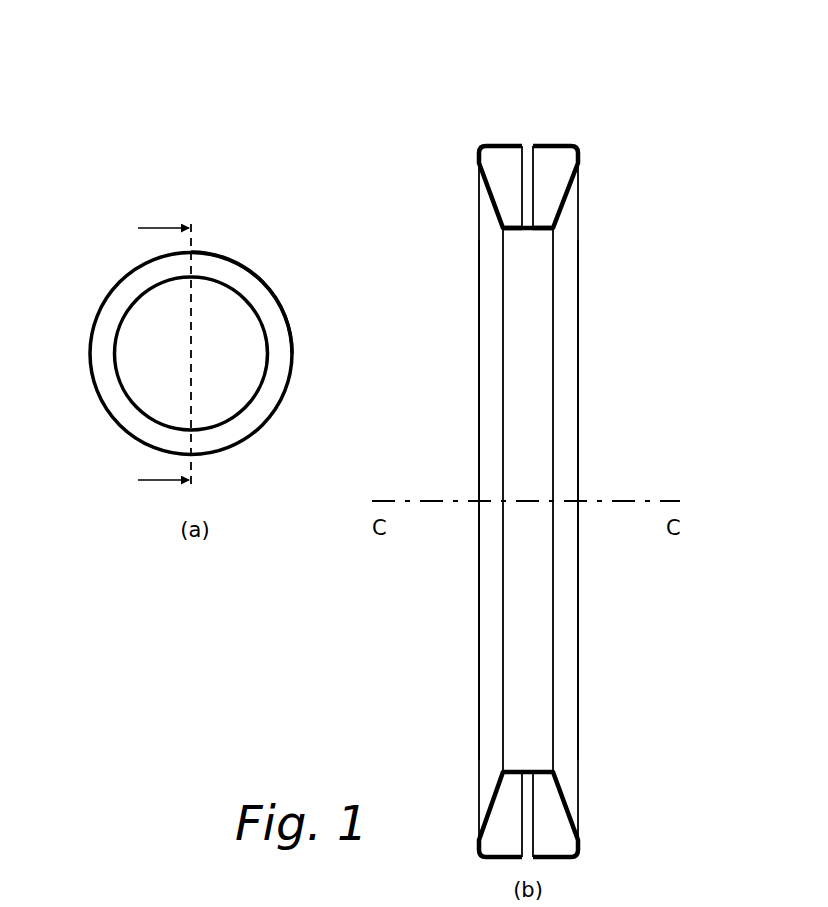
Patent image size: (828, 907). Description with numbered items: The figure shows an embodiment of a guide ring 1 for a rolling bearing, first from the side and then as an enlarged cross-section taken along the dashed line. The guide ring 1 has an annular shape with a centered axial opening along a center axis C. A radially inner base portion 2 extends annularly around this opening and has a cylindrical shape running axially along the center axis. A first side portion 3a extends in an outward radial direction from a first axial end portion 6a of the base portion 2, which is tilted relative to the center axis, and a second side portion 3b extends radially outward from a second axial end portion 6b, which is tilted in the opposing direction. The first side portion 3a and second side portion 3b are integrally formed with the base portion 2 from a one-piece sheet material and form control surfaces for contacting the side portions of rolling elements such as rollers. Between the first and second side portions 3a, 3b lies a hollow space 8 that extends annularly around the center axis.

In FIG. 1a, the guide ring 1 is at (106, 251).
In FIG. 1b, the guide ring 1 is at (467, 104).
In FIG. 1a, the base portion 2 is at (260, 392).
In FIG. 1b, the base portion 2 is at (535, 395).
In FIG. 1b, the first side portion 3a is at (491, 302).
In FIG. 1a, the second side portion 3b is at (282, 349).
In FIG. 1b, the second side portion 3b is at (566, 322).
In FIG. 1b, the first axial end portion 6a is at (503, 228).
In FIG. 1b, the second axial end portion 6b is at (553, 228).
In FIG. 1b, the hollow space 8 is at (559, 188).